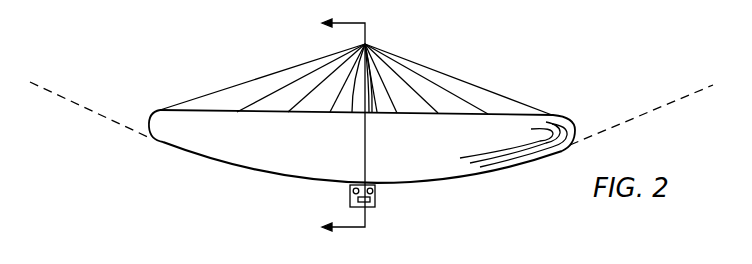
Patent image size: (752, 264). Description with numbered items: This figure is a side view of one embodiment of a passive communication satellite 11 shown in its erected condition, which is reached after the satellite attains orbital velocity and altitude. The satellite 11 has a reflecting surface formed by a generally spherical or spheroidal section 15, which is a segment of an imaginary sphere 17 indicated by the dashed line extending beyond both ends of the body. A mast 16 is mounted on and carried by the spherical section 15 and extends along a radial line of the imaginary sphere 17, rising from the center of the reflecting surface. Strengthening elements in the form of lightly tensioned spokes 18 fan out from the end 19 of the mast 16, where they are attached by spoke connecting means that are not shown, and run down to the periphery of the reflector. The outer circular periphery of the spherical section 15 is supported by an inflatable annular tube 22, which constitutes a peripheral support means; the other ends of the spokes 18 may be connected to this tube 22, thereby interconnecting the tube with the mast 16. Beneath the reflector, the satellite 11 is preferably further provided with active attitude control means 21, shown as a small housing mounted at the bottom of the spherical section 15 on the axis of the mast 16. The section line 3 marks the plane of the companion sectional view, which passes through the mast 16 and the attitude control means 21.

The section line 3- 3 is at (330, 126).
The passive communication satellite 11 is at (178, 154).
The spherical section 15 is at (240, 170).
The mast 16 is at (375, 77).
The imaginary sphere 17 is at (653, 113).
The lightly tensioned spokes 18 is at (436, 68).
The end of mast 19 is at (365, 44).
The active attitude control means 21 is at (378, 193).
The inflatable annular tube 22 is at (152, 110).